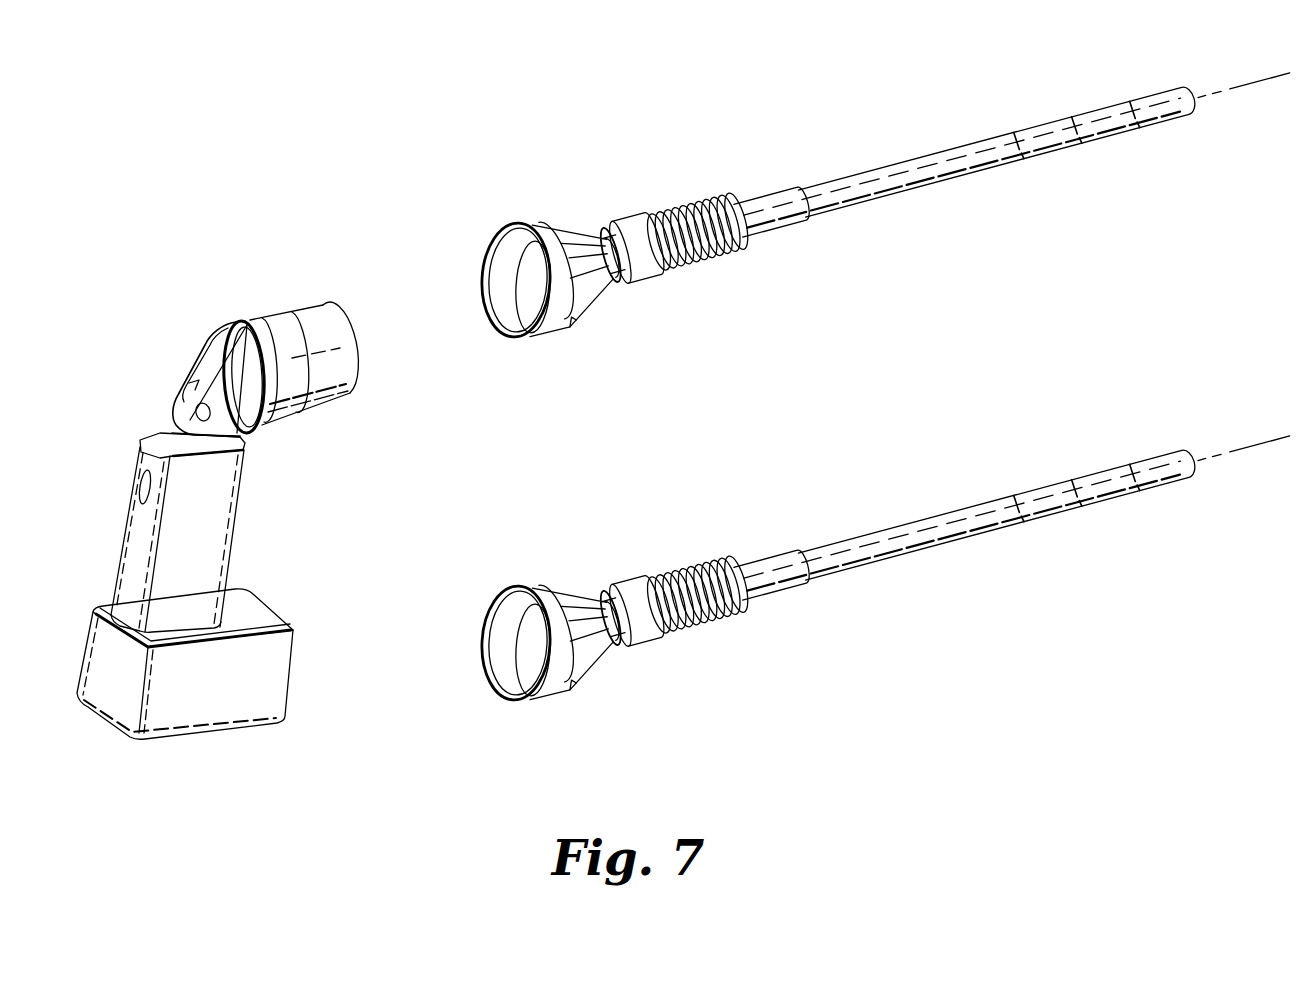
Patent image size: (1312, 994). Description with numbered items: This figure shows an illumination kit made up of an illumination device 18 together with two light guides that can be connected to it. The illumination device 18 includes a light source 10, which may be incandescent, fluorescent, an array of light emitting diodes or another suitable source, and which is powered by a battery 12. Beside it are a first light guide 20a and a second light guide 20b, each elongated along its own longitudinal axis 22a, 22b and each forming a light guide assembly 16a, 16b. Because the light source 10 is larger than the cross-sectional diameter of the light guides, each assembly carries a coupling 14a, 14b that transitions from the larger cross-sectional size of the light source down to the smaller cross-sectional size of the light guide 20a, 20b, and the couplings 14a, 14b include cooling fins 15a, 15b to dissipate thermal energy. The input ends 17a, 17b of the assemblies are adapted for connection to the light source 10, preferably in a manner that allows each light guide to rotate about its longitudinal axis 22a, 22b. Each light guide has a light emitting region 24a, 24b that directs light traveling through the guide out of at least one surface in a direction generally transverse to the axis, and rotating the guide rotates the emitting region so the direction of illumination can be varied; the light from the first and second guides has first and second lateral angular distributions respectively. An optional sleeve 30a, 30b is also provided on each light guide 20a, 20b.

The light source 10 is at (297, 318).
The battery 12 is at (278, 669).
The coupling 14a is at (560, 218).
The coupling 14b is at (576, 603).
The cooling fins 15a is at (592, 238).
The cooling fins 15b is at (622, 595).
The instrument 16a is at (484, 186).
The instrument 16b is at (846, 574).
The cup 17a is at (520, 318).
The cup 17b is at (531, 668).
The handle device 18 is at (328, 156).
The light guide 20a is at (911, 161).
The light guide 20b is at (966, 522).
The longitudinal axis 22a is at (1208, 92).
The longitudinal axis 22b is at (1235, 427).
The light emitting region 24a is at (1076, 116).
The light emitting region 24b is at (1077, 472).
The sleeve 30a is at (689, 207).
The sleeve 30b is at (698, 578).